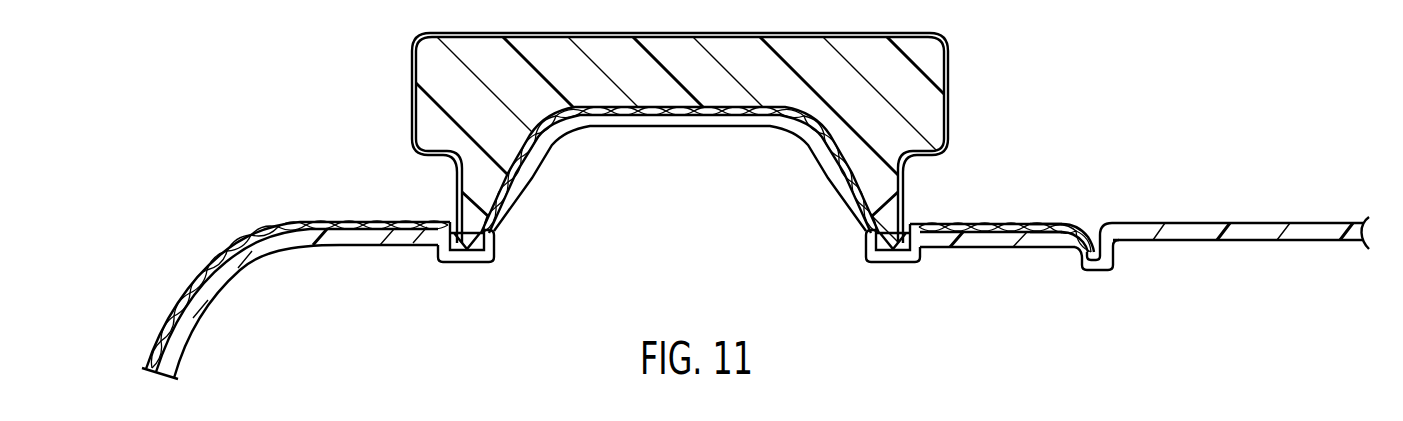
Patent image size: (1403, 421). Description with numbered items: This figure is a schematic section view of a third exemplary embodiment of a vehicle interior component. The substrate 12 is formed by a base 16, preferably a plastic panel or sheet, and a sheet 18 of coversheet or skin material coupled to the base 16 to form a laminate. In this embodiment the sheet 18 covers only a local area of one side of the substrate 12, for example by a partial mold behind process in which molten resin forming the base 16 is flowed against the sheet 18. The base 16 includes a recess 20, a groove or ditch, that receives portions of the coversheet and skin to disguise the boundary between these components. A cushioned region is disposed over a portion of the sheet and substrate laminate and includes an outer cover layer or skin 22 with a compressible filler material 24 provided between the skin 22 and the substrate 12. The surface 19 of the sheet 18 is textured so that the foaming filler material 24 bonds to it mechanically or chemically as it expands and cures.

The substrate 12 is at (1193, 220).
The base 16 is at (212, 300).
The sheet 18 is at (957, 224).
The surface 19 is at (1039, 219).
The recess 20 is at (472, 262).
The skin 22 is at (953, 84).
The filler material 24 is at (848, 91).